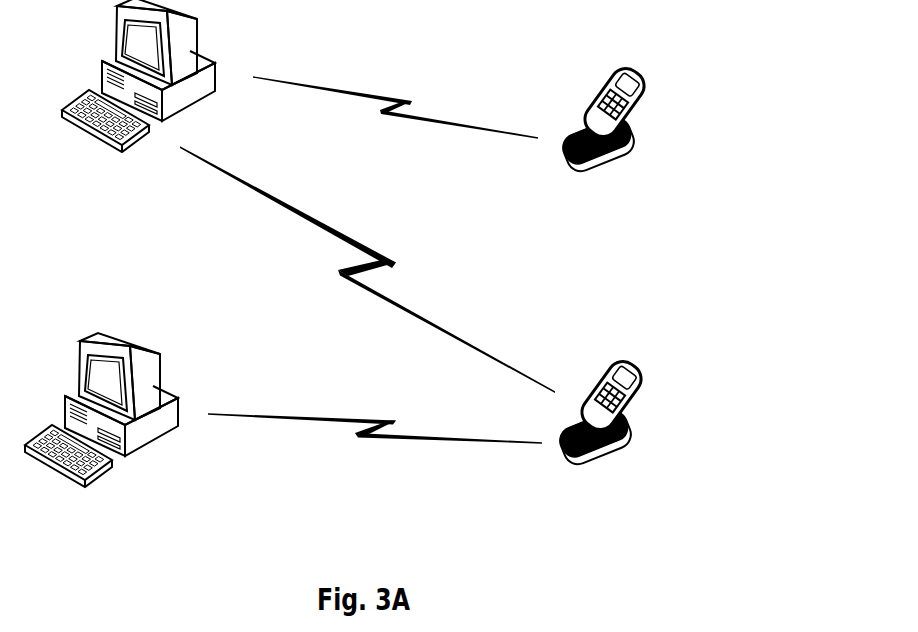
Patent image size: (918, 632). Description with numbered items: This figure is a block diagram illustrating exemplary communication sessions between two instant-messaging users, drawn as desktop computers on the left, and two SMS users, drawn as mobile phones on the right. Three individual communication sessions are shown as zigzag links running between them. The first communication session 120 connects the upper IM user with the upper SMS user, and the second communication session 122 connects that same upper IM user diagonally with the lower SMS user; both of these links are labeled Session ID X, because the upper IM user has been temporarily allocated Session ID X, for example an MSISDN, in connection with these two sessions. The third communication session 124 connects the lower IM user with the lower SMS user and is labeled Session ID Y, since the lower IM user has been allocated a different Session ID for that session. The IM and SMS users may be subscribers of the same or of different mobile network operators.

The first communication session 120 is at (392, 114).
The second communication session 122 is at (352, 281).
The third communication session 124 is at (365, 437).